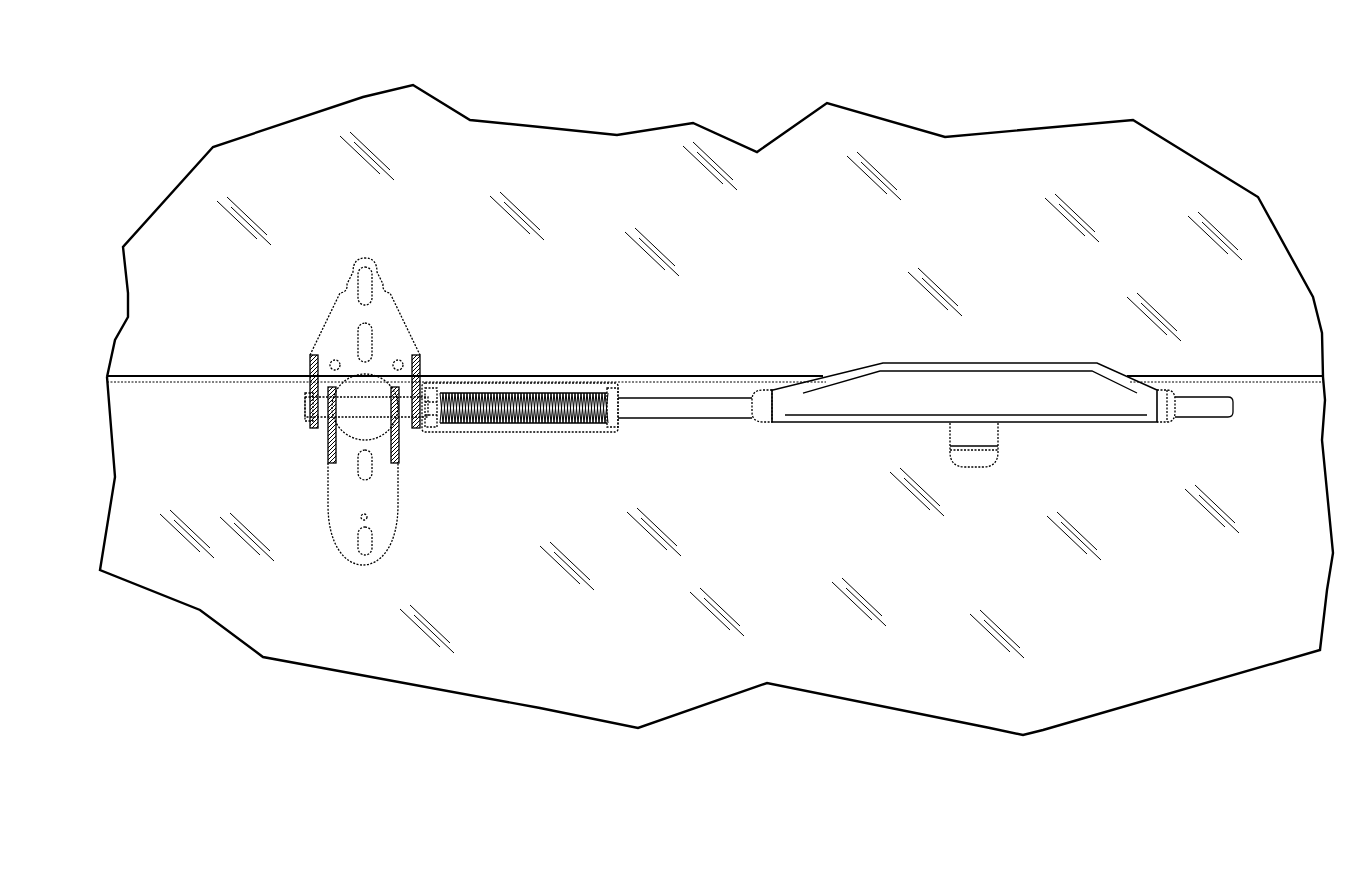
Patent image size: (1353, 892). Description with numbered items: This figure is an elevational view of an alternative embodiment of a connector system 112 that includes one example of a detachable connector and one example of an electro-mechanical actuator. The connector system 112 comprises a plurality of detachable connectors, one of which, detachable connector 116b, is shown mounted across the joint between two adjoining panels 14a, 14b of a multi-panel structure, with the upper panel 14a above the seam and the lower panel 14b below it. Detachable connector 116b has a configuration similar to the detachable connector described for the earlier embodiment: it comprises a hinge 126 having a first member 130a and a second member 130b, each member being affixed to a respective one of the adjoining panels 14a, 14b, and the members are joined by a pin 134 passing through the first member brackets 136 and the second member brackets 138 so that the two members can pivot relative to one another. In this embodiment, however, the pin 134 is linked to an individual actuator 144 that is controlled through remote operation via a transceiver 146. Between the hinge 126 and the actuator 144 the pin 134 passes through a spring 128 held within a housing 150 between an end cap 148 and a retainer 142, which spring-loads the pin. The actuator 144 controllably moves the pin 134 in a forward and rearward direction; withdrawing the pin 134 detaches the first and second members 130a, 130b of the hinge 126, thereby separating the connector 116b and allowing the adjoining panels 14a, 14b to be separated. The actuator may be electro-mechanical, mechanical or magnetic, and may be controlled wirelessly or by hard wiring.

The connector system 112 is at (150, 182).
The upper panel 14a is at (715, 233).
The lower panel 14b is at (716, 556).
The detachable connector 116b is at (417, 258).
The hinge 126 is at (403, 318).
The first member 130a is at (337, 318).
The second member 130b is at (387, 497).
The upper flange 136 is at (310, 372).
The lower flange 138 is at (328, 447).
The pin 134 is at (400, 425).
The spring end cap 148 is at (450, 380).
The spring 128 is at (541, 385).
The spring housing 150 is at (470, 425).
The spring retainer 142 is at (607, 443).
The actuator 144 is at (923, 373).
The transceiver 146 is at (990, 438).